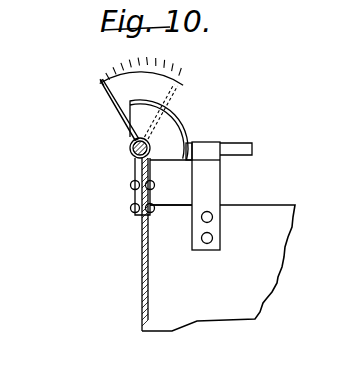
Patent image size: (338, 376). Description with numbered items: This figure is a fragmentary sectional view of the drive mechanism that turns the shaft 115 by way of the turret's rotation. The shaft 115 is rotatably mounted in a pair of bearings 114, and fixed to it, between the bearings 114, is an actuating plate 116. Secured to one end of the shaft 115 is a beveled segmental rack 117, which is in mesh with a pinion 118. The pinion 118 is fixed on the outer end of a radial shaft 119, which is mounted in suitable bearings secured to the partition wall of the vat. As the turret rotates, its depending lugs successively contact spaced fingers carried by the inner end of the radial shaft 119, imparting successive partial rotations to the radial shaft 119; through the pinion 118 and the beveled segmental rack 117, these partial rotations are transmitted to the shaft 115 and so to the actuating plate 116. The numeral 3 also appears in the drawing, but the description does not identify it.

The shaft 3 is at (142, 263).
The bearings 114 is at (232, 135).
The shaft 115 is at (132, 157).
The actuating plate 116 is at (114, 114).
The beveled segmental rack 117 is at (171, 121).
The pinion 118 is at (154, 163).
The radial shaft 119 is at (229, 156).